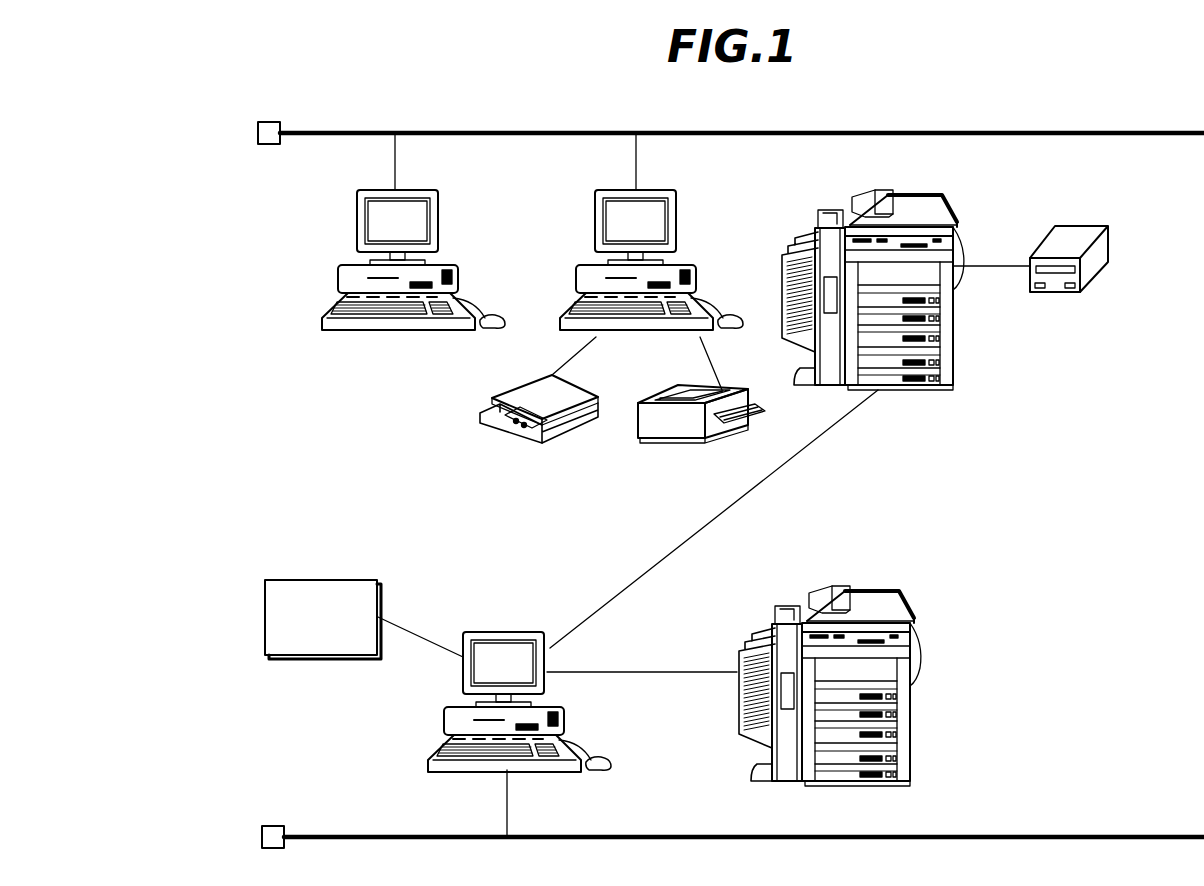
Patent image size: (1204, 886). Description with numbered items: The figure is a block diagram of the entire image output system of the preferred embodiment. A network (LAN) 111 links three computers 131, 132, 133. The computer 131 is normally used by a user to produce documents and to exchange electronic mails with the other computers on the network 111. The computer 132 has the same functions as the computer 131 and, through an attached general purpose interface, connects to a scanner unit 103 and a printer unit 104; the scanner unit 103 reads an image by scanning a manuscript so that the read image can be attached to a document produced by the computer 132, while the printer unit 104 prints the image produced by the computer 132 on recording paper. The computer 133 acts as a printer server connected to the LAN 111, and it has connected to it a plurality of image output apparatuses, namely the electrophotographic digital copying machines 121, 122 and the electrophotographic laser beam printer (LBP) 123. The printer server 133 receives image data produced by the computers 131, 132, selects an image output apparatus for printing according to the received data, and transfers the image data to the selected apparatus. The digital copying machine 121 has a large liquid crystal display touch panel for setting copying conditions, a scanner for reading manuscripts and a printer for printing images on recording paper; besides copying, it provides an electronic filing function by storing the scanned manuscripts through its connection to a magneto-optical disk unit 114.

The network (LAN) 111 is at (462, 131).
The computer 131 is at (353, 211).
The computer 132 is at (594, 211).
The computer (printer server) 133 is at (497, 631).
The digital copying machine 121 is at (835, 212).
The digital copying machine 122 is at (905, 600).
The magneto-optical disk unit 114 is at (1078, 226).
The scanner unit 103 is at (510, 433).
The printer unit 104 is at (660, 440).
The laser beam printer (LBP) 123 is at (308, 579).